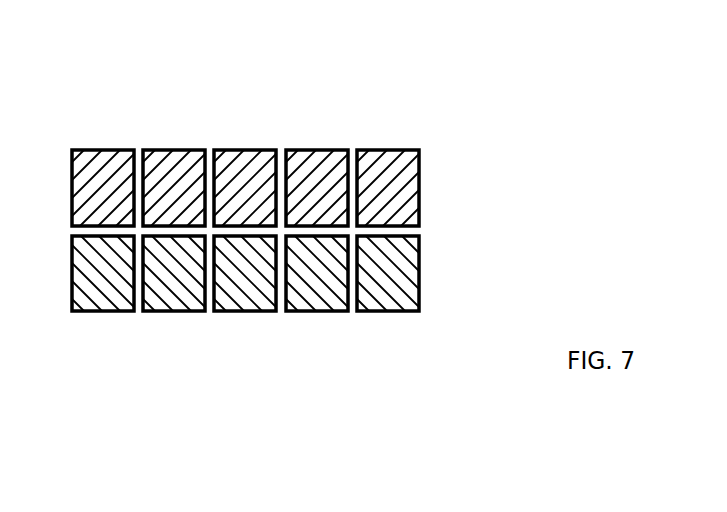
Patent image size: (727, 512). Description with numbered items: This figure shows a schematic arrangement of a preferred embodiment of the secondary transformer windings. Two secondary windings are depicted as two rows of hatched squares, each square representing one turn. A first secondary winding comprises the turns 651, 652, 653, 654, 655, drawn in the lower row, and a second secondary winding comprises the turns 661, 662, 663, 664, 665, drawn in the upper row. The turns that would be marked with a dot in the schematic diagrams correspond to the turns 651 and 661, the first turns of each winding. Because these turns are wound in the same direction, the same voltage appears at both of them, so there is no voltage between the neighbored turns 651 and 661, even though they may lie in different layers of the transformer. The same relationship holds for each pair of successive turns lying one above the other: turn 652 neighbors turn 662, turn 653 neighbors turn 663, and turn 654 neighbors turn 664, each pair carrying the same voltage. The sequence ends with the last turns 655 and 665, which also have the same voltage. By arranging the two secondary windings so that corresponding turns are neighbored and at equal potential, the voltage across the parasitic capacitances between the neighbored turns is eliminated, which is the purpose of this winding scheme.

The turn 661 is at (103, 168).
The turn 662 is at (175, 168).
The turn 663 is at (246, 168).
The turn 664 is at (318, 168).
The turn 665 is at (388, 168).
The turn 651 is at (102, 292).
The turn 652 is at (174, 292).
The turn 653 is at (245, 292).
The turn 654 is at (317, 292).
The turn 655 is at (388, 292).